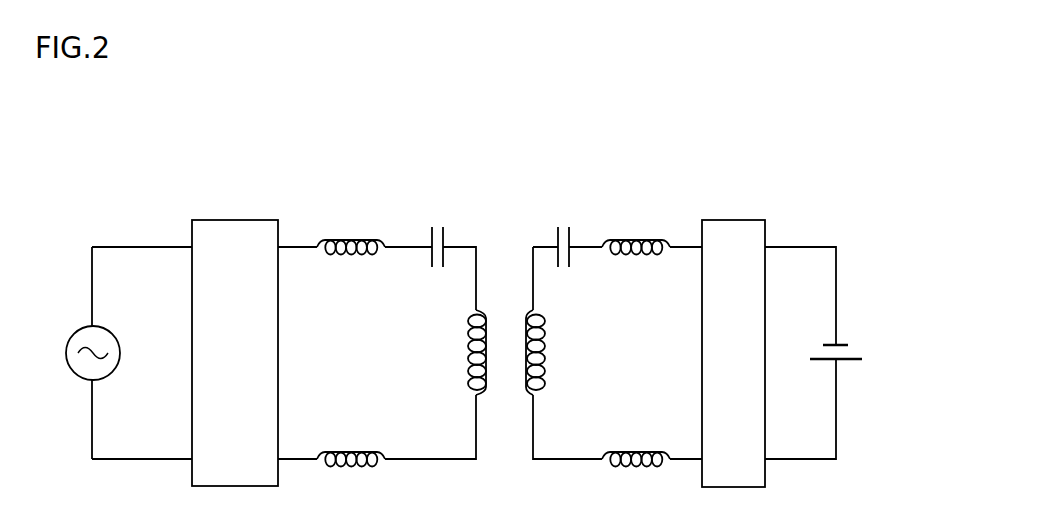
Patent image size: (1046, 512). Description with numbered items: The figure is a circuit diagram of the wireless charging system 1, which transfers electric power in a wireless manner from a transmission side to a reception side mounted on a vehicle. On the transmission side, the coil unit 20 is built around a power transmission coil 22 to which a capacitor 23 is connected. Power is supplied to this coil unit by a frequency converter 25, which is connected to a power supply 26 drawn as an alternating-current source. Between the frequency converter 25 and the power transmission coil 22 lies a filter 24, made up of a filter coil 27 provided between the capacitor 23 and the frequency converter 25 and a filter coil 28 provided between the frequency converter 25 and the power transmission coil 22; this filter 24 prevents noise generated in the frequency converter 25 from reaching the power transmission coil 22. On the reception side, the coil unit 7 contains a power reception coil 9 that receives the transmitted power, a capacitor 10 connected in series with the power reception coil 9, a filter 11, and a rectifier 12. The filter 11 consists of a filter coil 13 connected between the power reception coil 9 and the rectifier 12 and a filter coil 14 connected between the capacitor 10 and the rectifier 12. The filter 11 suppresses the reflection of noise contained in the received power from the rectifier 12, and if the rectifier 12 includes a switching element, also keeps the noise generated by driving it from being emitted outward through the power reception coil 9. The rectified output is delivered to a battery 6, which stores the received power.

The wireless charging system 1 is at (463, 111).
The coil unit 20 is at (500, 164).
The frequency converter 25 is at (237, 220).
The filter 24 is at (358, 195).
The filter coil 27 is at (335, 240).
The filter coil 28 is at (318, 453).
The capacitor 23 is at (430, 238).
The power transmission coil 22 is at (491, 332).
The power supply 26 is at (67, 352).
The power reception coil 9 is at (520, 332).
The coil unit 7 is at (753, 133).
The capacitor 10 is at (571, 238).
The filter 11 is at (682, 165).
The filter coil 13 is at (638, 453).
The filter coil 14 is at (647, 238).
The rectifier 12 is at (740, 220).
The battery 6 is at (843, 343).